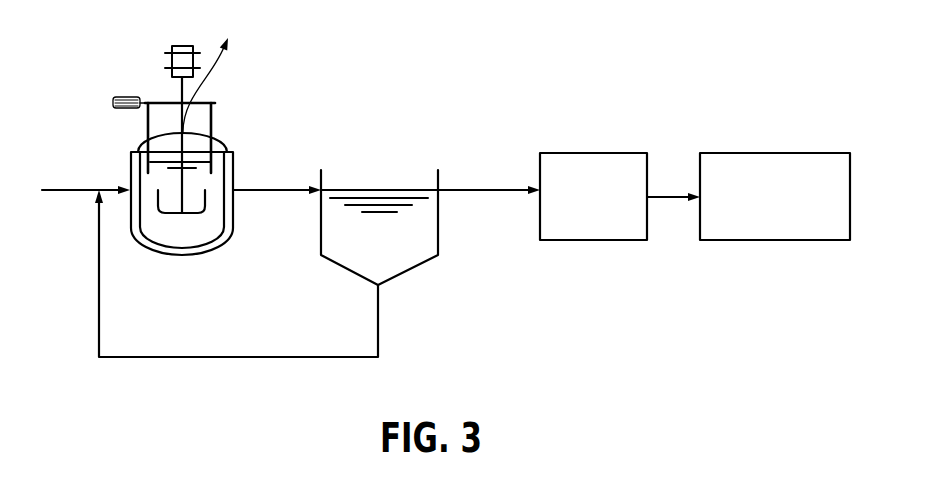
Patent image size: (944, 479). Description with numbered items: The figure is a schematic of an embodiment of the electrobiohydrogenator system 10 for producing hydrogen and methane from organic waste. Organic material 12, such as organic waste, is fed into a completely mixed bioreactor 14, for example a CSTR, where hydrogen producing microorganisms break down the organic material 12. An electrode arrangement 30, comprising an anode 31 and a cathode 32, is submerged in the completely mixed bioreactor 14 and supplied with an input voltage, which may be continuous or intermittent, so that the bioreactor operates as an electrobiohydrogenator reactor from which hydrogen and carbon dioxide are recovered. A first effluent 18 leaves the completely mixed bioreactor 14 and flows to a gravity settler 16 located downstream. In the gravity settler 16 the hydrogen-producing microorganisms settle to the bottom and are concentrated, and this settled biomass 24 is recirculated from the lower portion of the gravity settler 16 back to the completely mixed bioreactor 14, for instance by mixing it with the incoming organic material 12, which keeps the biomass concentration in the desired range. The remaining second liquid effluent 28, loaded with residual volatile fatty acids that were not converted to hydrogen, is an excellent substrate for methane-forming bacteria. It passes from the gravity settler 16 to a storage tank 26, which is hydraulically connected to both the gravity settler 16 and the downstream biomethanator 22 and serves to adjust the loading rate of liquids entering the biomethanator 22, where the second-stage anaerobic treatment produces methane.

The electrobiohydrogenator system 10 is at (370, 140).
The organic material 12 is at (73, 192).
The completely mixed bioreactor 14 is at (148, 210).
The gravity settler 16 is at (415, 178).
The first effluent 18 is at (277, 187).
The biomethanator 22 is at (782, 230).
The settled biomass 24 is at (380, 318).
The storage tank 26 is at (603, 228).
The second liquid effluent 28 is at (488, 192).
The electrode arrangement 30 is at (147, 102).
The anode 31 is at (212, 122).
The cathode 32 is at (148, 127).